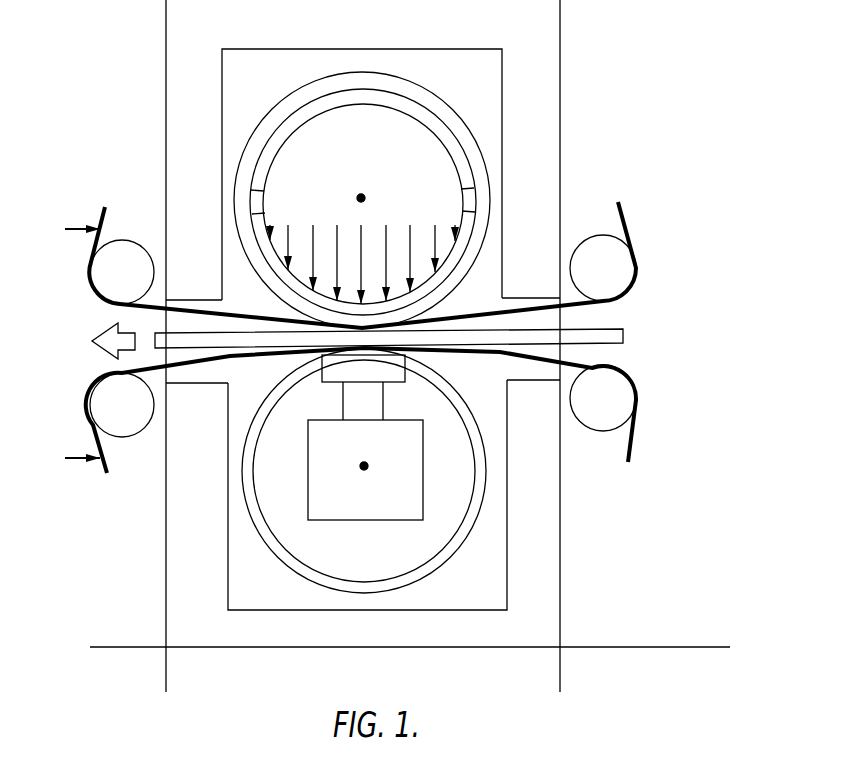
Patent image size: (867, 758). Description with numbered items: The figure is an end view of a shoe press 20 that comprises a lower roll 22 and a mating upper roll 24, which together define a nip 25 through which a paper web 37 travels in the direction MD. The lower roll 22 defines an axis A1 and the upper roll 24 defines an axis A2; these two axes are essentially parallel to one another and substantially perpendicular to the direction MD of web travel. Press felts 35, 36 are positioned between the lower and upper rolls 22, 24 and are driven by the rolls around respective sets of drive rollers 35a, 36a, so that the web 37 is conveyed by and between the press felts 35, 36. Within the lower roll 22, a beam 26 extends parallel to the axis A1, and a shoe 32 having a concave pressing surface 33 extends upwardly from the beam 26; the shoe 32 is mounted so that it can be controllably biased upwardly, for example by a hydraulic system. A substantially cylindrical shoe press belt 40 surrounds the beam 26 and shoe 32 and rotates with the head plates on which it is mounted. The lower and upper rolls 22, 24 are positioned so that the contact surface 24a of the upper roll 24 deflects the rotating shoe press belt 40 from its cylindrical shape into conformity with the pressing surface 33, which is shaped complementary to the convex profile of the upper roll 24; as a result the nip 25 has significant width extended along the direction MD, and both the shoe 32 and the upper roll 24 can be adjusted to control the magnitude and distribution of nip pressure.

The shoe press 20 is at (667, 128).
The lower roll 22 is at (490, 549).
The upper roll 24 is at (478, 117).
The contact surface 24a is at (252, 275).
The nip 25 is at (430, 315).
The beam 26 is at (323, 497).
The shoe 32 is at (340, 373).
The pressing surface 33 is at (350, 364).
The press felt 35 is at (633, 452).
The drive rollers 35a is at (621, 403).
The press felt 36 is at (627, 227).
The drive rollers 36a is at (612, 274).
The paper web 37 is at (185, 345).
The shoe press belt 40 is at (408, 589).
The axis A1 is at (368, 466).
The axis A2 is at (365, 196).
The direction MD is at (118, 326).